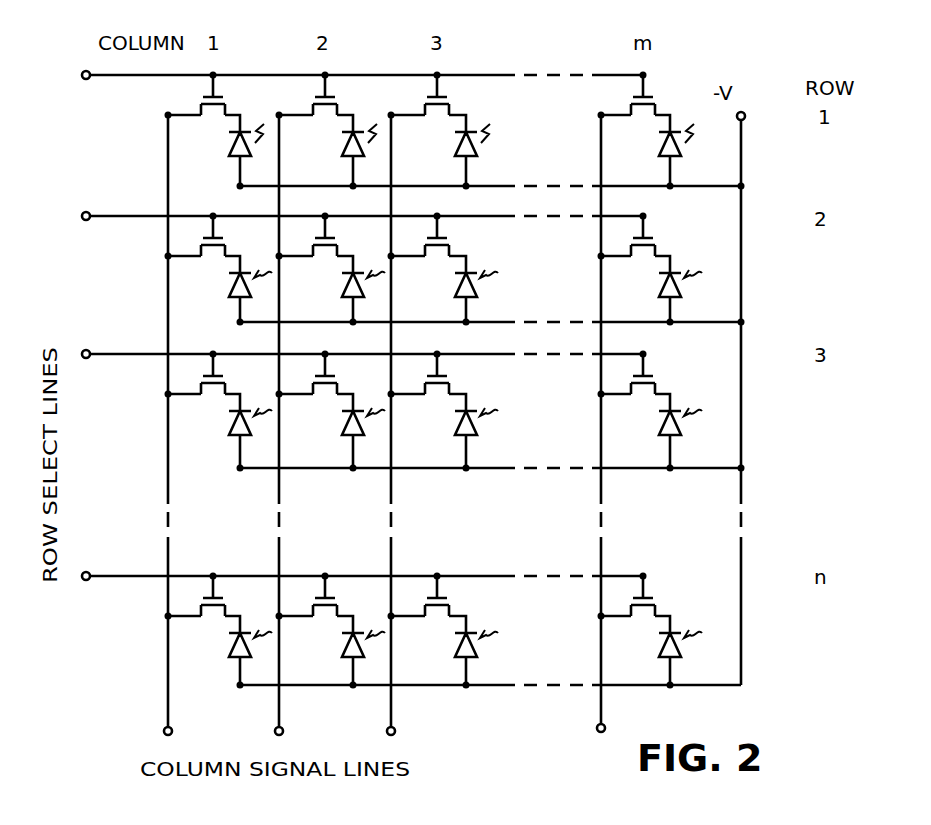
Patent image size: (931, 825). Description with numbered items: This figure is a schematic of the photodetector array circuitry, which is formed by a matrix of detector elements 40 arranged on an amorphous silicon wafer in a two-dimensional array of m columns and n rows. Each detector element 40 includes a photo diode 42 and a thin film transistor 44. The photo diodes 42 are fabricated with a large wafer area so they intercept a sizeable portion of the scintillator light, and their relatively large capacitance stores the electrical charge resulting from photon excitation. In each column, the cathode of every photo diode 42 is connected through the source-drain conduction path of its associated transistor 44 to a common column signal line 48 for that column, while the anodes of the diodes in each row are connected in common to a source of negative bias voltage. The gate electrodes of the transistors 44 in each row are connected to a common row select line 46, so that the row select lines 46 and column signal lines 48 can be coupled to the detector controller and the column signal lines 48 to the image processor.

The detector element 40 is at (160, 136).
The photo diode 42 is at (230, 660).
The thin film transistor 44 is at (243, 594).
The row select line 46 is at (150, 576).
The column signal line 48 is at (601, 705).